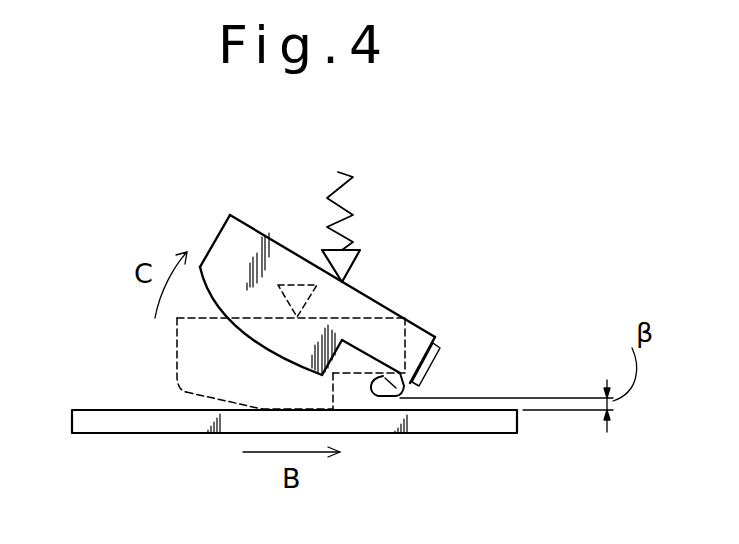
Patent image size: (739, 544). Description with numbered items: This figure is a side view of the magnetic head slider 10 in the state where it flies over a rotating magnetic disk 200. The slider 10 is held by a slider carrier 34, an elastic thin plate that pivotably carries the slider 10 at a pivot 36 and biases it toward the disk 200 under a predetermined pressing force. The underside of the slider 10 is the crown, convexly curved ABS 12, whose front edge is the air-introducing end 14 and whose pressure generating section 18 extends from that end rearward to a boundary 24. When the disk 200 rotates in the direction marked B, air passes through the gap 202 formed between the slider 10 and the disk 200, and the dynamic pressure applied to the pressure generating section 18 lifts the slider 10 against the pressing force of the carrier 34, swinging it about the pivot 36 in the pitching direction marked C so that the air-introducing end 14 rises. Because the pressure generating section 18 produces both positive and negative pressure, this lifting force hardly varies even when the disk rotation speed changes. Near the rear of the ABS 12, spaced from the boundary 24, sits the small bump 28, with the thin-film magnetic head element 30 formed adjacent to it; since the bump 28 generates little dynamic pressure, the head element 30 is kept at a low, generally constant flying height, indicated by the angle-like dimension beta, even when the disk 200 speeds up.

The magnetic head slider 10 is at (378, 290).
The ABS 12 is at (247, 330).
The air-introducing end 14 is at (200, 267).
The pressure generating section 18 is at (283, 337).
The boundary 24 is at (336, 355).
The bump 28 is at (405, 392).
The thin-film magnetic head element 30 is at (433, 364).
The slider carrier 34 is at (355, 246).
The pivot 36 is at (345, 281).
The magnetic disk 200 is at (463, 422).
The gap 202 is at (207, 403).